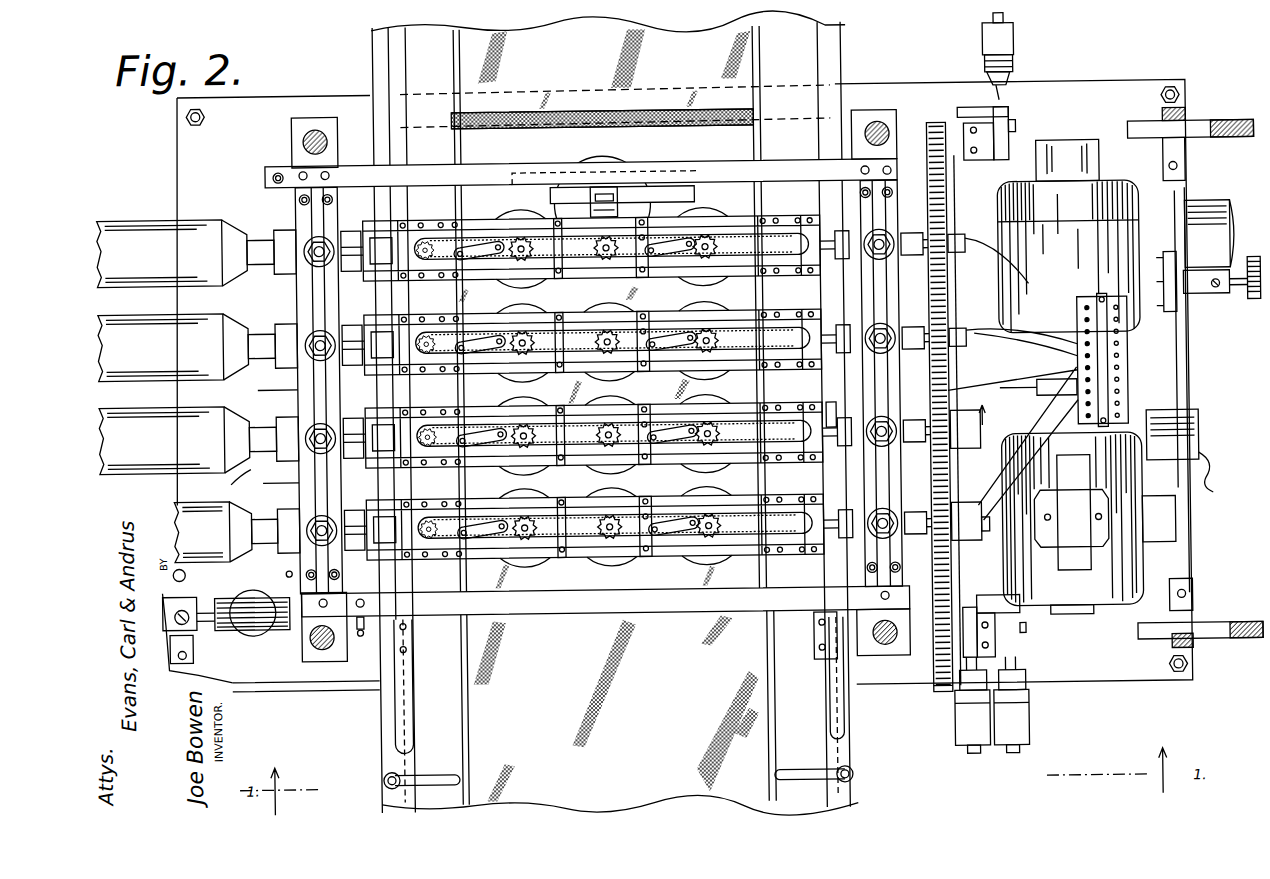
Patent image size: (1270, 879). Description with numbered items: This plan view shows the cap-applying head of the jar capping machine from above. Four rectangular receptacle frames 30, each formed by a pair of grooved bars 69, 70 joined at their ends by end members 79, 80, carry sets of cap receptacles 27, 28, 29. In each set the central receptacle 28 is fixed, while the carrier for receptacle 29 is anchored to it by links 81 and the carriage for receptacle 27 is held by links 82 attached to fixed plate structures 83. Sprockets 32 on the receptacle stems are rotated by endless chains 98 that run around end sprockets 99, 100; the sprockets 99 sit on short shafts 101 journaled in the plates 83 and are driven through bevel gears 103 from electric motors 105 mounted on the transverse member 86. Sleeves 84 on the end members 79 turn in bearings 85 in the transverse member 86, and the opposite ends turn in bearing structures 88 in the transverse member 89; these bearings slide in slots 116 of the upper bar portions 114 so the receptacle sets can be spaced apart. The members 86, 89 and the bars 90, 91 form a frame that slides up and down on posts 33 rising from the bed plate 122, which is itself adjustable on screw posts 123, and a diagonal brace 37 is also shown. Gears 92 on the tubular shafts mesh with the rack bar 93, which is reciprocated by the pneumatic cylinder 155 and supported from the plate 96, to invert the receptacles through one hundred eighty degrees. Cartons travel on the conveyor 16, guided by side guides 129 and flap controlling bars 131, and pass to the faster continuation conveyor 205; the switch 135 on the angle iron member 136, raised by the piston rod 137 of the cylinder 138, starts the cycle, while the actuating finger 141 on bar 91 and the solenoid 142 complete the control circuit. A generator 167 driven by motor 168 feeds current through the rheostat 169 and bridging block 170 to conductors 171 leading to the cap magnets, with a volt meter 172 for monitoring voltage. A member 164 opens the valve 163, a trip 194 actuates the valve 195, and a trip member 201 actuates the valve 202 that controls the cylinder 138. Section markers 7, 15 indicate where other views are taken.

The direction of chain travel 7 is at (674, 475).
The drive direction indicator 15 is at (867, 423).
The conveyor 16 is at (593, 740).
The receptacle 27 is at (510, 277).
The central receptacle 28 is at (605, 277).
The receptacle 29 is at (700, 278).
The supporting frame 30 is at (737, 218).
The sprocket 32 is at (528, 375).
The guide post 33 is at (306, 136).
The diagonal supporting brace 37 is at (1215, 128).
The grooved bar 69 is at (520, 465).
The grooved bar 70 is at (490, 372).
The end member 79 is at (350, 365).
The end member 80 is at (831, 408).
The link 81 is at (665, 277).
The link 82 is at (498, 238).
The fixed plate structure 83 is at (445, 365).
The sleeve 84 is at (348, 455).
The bearing 85 is at (345, 318).
The transverse member 86 is at (298, 294).
The bearing structure 88 is at (848, 495).
The transverse member 89 is at (895, 197).
The bar 90 is at (490, 168).
The bar 91 is at (523, 612).
The gear 92 is at (950, 228).
The rack bar 93 is at (950, 287).
The plate 96 is at (1038, 387).
The endless chain 98 is at (555, 277).
The end sprocket 99 is at (445, 236).
The end sprocket 100 is at (786, 262).
The short shaft 101 is at (430, 278).
The bevel gear 103 is at (415, 218).
The electric motor 105 is at (198, 391).
The upper bar portion 114 is at (960, 382).
The slot 116 is at (960, 365).
The bed plate 122 is at (1128, 95).
The screw post 123 is at (190, 112).
The side guide 129 is at (385, 760).
The flap controlling bar 131 is at (410, 676).
The electric switch 135 is at (606, 192).
The angle iron member 136 is at (690, 188).
The piston rod 137 is at (622, 205).
The cylinder 138 is at (588, 165).
The actuating finger 141 is at (357, 633).
The solenoid 142 is at (252, 586).
The pneumatic cylinder 155 is at (962, 548).
The valve 163 is at (955, 742).
The member 164 is at (938, 690).
The direct current generator 167 is at (1062, 256).
The electric motor 168 is at (1138, 566).
The rheostat 169 is at (1212, 222).
The bridging block 170 is at (1130, 376).
The electrical conductor 171 is at (970, 242).
The volt meter 172 is at (1191, 456).
The trip 194 is at (1023, 650).
The valve 195 is at (1025, 733).
The trip member 201 is at (1012, 120).
The valve 202 is at (1018, 46).
The continuation conveyor 205 is at (566, 66).